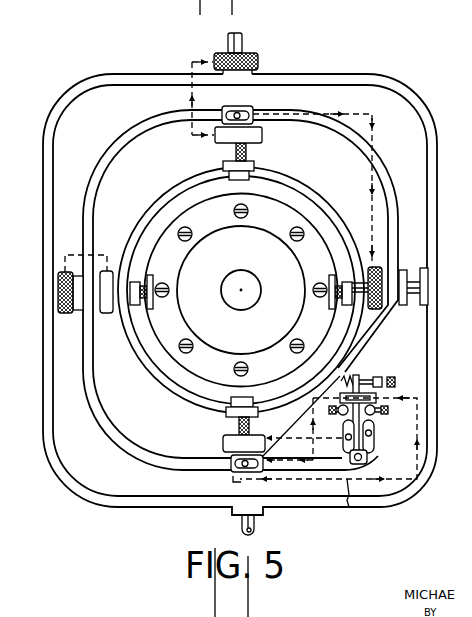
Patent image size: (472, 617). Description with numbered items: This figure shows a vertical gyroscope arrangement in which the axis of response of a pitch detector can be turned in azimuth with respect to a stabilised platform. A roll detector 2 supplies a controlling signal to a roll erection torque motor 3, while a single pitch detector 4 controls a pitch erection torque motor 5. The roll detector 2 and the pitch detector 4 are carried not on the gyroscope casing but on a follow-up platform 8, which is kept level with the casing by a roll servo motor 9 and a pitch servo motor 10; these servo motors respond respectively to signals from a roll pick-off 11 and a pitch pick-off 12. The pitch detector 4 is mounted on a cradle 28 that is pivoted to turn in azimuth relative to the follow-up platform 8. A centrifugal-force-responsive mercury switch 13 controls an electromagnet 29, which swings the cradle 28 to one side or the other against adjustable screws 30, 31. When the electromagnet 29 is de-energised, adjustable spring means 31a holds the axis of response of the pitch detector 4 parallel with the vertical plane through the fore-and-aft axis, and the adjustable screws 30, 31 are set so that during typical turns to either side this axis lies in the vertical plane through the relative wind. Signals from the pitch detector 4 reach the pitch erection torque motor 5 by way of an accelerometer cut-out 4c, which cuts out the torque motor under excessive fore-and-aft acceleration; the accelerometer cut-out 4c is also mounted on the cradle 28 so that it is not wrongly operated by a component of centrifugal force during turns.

The roll detector 2 is at (253, 112).
The roll erection torque motor 3 is at (381, 267).
The pitch detector 4 is at (376, 451).
The accelerometer cut-out 4c is at (343, 501).
The pitch erection torque motor 5 is at (223, 442).
The follow-up platform 8 is at (124, 435).
The roll servo motor 9 is at (258, 53).
The pitch servo motor 10 is at (60, 294).
The roll pick-off 11 is at (225, 138).
The pitch pick-off 12 is at (106, 316).
The centrifugal-force-responsive mercury switch 13 is at (231, 461).
The cradle 28 is at (378, 435).
The electromagnet 29 is at (376, 396).
The adjustable screw 30 is at (304, 430).
The adjustable screw 31 is at (388, 410).
The adjustable spring means 31a is at (373, 377).